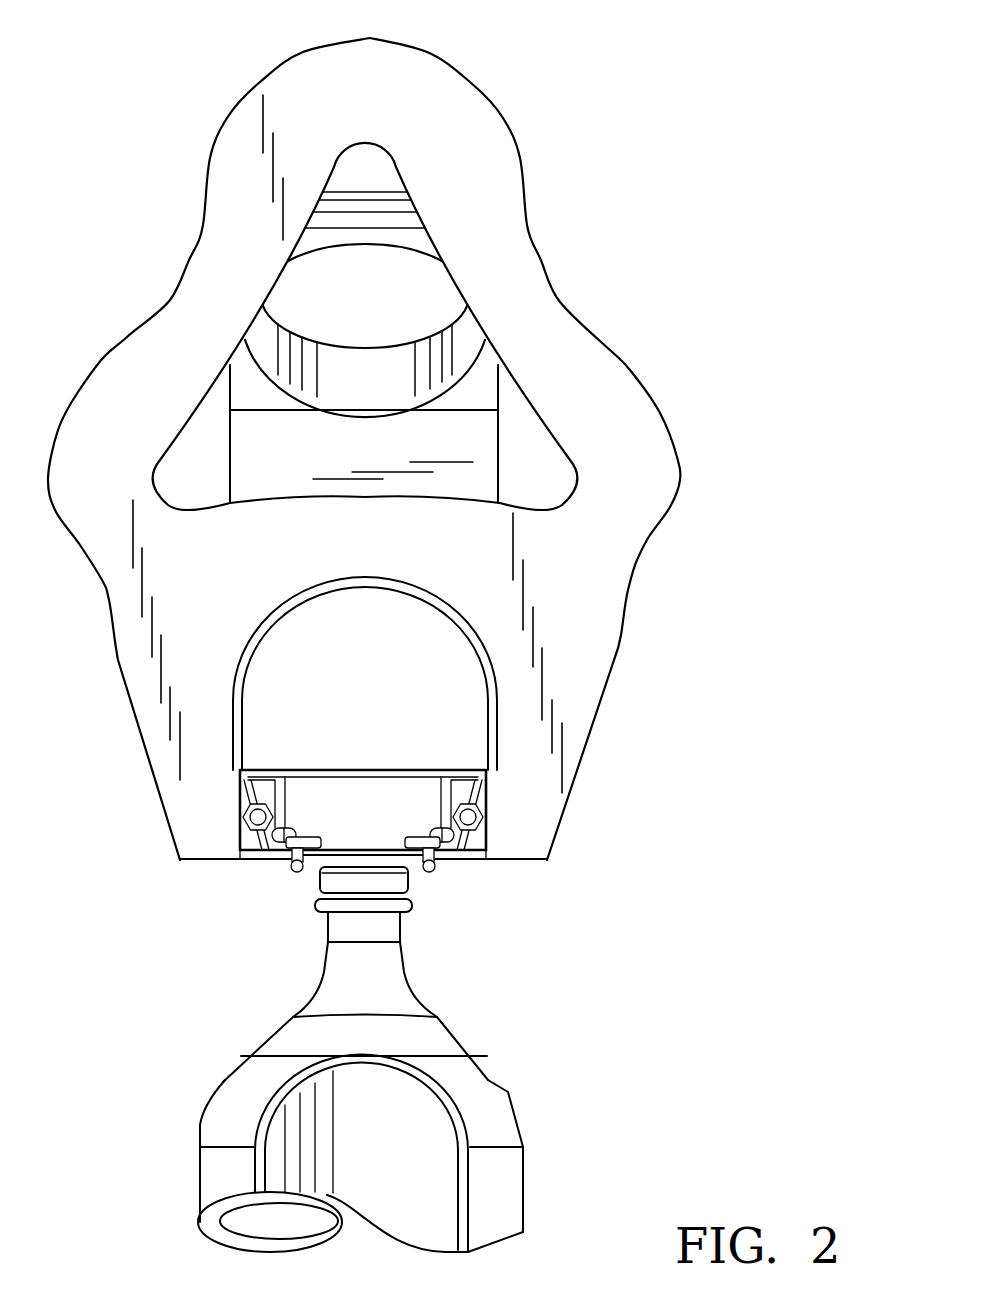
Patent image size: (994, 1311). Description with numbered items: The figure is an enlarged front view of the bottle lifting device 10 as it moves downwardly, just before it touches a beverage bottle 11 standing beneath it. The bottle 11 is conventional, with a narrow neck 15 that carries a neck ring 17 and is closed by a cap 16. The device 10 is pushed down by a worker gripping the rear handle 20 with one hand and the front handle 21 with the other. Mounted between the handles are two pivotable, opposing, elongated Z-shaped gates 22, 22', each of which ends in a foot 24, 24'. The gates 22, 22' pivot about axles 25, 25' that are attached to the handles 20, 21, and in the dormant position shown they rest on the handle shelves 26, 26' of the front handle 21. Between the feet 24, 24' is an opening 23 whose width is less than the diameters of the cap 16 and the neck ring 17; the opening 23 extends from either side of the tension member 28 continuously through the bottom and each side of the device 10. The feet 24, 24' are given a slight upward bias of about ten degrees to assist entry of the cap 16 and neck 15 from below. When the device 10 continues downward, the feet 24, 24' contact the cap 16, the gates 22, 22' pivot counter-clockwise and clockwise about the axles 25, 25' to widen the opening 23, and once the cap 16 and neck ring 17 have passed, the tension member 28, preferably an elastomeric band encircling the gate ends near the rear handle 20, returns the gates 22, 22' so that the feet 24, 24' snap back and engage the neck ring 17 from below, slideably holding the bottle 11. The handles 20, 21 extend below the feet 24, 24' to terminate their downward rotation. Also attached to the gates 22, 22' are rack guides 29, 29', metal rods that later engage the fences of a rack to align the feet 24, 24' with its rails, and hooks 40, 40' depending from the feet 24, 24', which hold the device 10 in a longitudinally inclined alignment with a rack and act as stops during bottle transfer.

The bottle lifting device 10 is at (587, 75).
The beverage bottle 11 is at (222, 1078).
The neck 15 is at (242, 976).
The cap 16 is at (325, 884).
The neck ring 17 is at (410, 913).
The rear handle 20 is at (291, 455).
The front handle 21 is at (566, 350).
The Z-shaped gate 22 is at (267, 785).
The Z-shaped gate 22' is at (461, 787).
The opening 23 is at (363, 790).
The foot 24 is at (317, 825).
The foot 24' is at (403, 833).
The axle 25 is at (228, 814).
The axle 25' is at (502, 817).
The handle shelf 26 is at (219, 880).
The handle shelf 26' is at (509, 896).
The tension member 28 is at (343, 770).
The rack guide 29 is at (296, 812).
The rack guide 29' is at (422, 813).
The hook 40 is at (274, 878).
The hook 40' is at (447, 886).